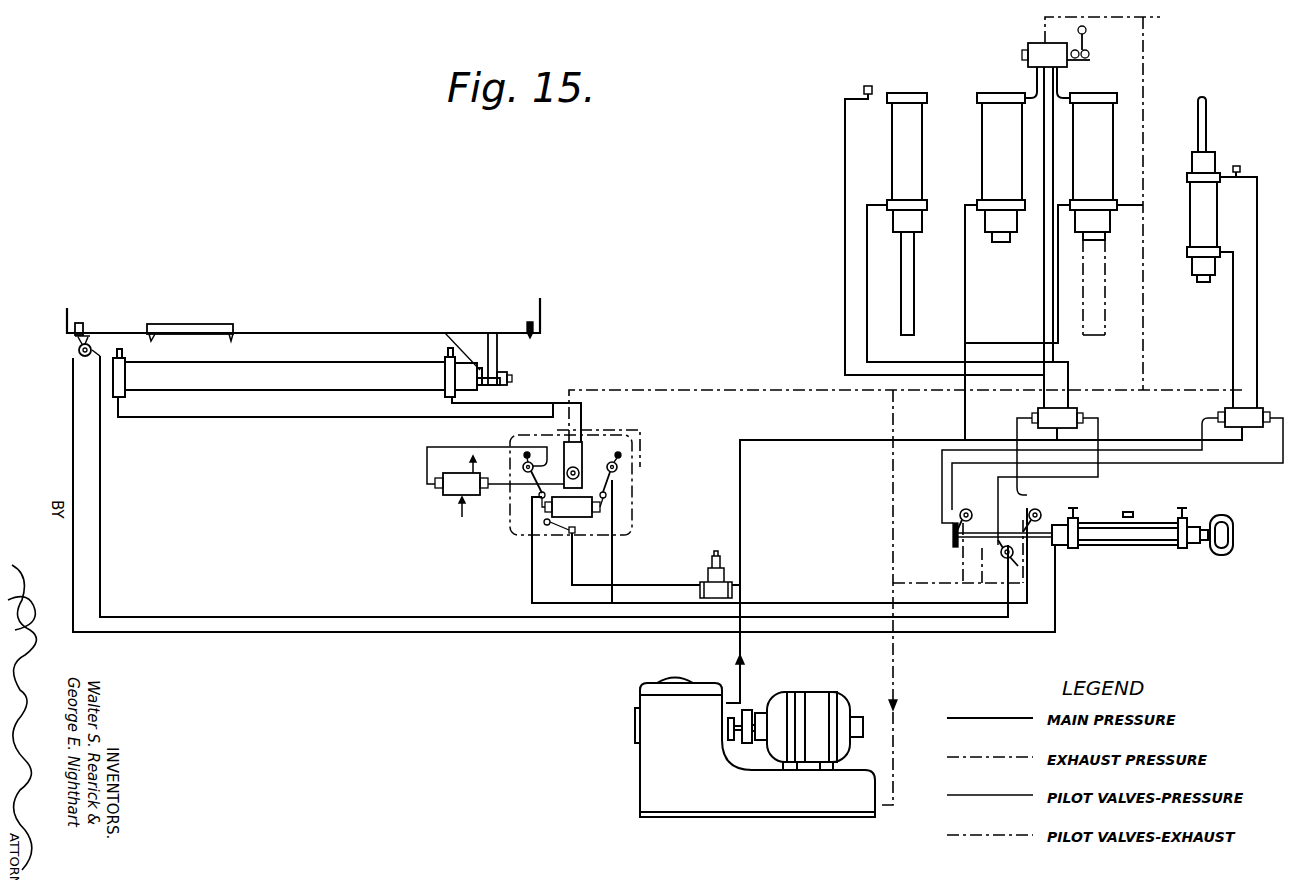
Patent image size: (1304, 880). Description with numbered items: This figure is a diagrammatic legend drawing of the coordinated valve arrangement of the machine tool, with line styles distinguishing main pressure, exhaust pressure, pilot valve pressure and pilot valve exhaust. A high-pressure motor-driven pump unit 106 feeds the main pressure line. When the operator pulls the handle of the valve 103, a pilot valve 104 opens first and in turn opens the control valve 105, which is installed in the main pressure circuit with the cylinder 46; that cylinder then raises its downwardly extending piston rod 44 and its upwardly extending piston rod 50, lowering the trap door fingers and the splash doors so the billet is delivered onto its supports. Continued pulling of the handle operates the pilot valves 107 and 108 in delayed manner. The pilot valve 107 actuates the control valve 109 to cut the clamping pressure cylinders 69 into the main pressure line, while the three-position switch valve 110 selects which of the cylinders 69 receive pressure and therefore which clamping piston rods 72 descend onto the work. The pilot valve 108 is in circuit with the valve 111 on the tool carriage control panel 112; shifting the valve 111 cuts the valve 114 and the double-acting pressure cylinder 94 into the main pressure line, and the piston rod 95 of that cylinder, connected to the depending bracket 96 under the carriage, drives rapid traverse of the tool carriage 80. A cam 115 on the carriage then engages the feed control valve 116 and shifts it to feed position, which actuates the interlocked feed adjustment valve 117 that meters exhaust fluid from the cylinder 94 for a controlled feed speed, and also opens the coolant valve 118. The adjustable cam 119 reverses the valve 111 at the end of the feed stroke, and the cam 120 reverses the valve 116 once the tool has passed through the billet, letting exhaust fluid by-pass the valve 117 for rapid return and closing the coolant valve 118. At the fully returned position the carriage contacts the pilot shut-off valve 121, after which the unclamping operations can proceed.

The piston rod 44 is at (1203, 283).
The cylinder 46 is at (1208, 224).
The piston rod 50 is at (1205, 128).
The pressure cylinders 69 is at (898, 148).
The piston rods 72 is at (911, 288).
The tool carriage 80 is at (406, 322).
The double-acting pressure cylinder 94 is at (333, 372).
The piston rod 95 is at (472, 359).
The depending bracket 96 is at (500, 350).
The valve 103 is at (1140, 538).
The pilot valve 104 is at (955, 512).
The control valve 105 is at (1220, 410).
The motor-driven pump unit 106 is at (765, 801).
The pilot valve 107 is at (1014, 558).
The pilot valve 108 is at (1040, 508).
The control valve 109 is at (1032, 411).
The switch valve 110 is at (1038, 44).
The valve 111 is at (624, 473).
The tool carriage control panel 112 is at (628, 529).
The valve 114 is at (595, 518).
The cam 115 is at (527, 325).
The feed control valve 116 is at (524, 470).
The feed adjustment valve 117 is at (575, 455).
The coolant valve 118 is at (450, 488).
The cam 119 is at (232, 328).
The cam 120 is at (147, 328).
The pilot shut-off valve 121 is at (76, 350).